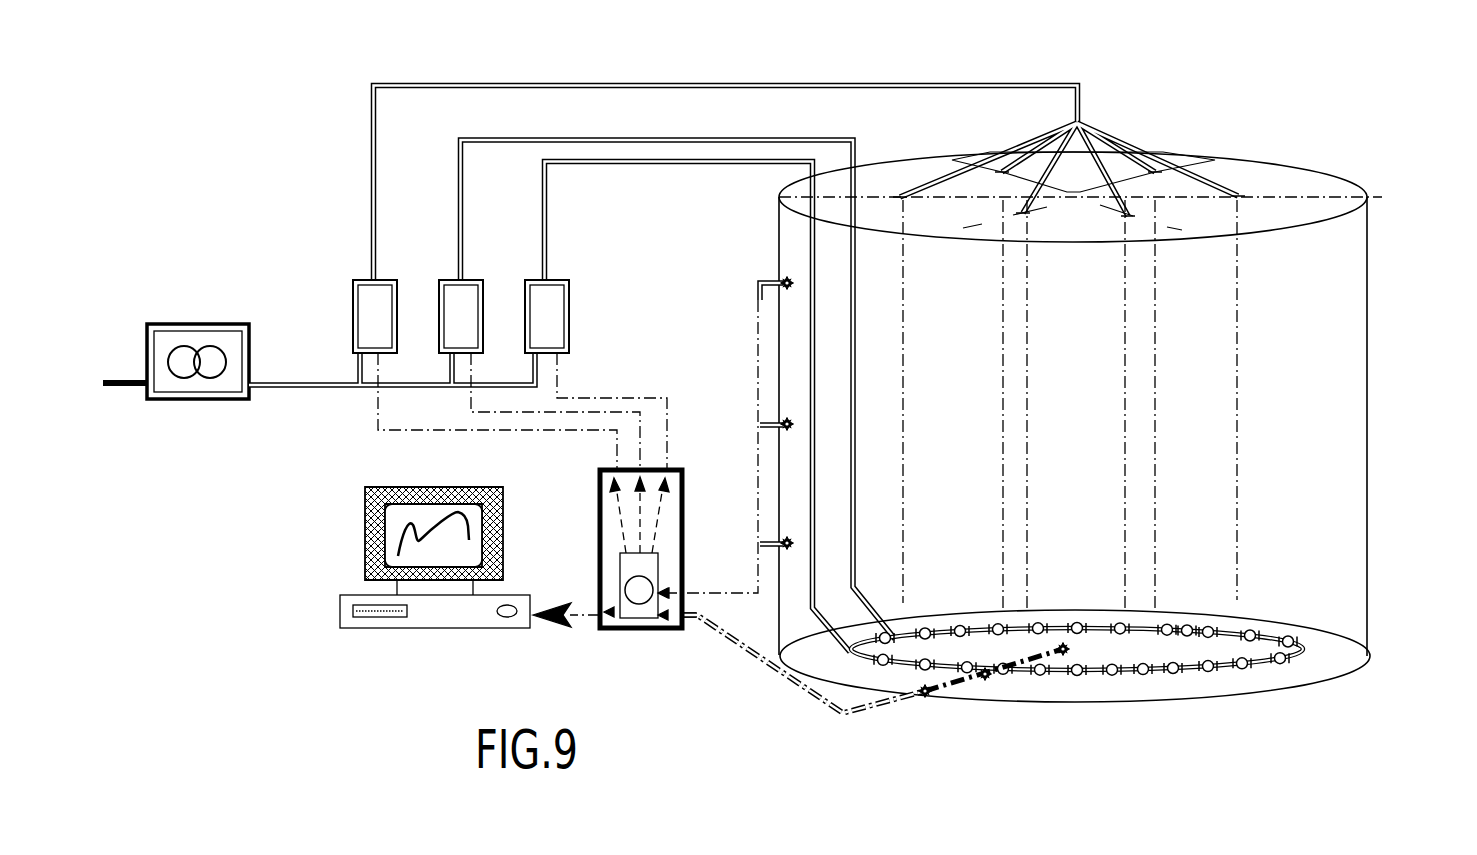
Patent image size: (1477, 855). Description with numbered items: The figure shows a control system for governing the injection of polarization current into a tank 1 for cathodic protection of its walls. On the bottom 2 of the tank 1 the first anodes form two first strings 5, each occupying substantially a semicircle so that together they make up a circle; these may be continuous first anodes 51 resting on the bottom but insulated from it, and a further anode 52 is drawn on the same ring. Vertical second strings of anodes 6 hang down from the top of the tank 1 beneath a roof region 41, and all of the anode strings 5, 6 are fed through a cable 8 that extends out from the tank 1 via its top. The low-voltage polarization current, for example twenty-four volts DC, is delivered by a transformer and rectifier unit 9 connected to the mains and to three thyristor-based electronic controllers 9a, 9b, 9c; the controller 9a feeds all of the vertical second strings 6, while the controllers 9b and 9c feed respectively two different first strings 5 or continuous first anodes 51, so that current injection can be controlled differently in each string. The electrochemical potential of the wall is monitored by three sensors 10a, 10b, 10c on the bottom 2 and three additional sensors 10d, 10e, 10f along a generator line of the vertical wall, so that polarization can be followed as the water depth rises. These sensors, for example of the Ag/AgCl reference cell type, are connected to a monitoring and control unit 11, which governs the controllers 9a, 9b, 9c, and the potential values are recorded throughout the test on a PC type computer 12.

The tank 1 is at (1392, 279).
The bottom wall 2 is at (1312, 672).
The tank roof 41 is at (1290, 196).
The first string of anodes 5 is at (1273, 632).
The first anode 51 is at (1075, 624).
The optical fibre sensor 52 is at (1186, 626).
The vertical second string of anodes 6 is at (922, 458).
The cable 8 is at (865, 83).
The current generator 9 is at (194, 332).
The electronic controller 9a is at (354, 280).
The electronic controller 9b is at (441, 280).
The electronic controller 9c is at (526, 280).
The sensor 10a is at (989, 679).
The sensor 10b is at (926, 697).
The sensor 10c is at (1064, 656).
The sensor 10d is at (782, 543).
The sensor 10e is at (782, 424).
The sensor 10f is at (782, 282).
The monitoring and control unit 11 is at (640, 629).
The computer 12 is at (438, 629).